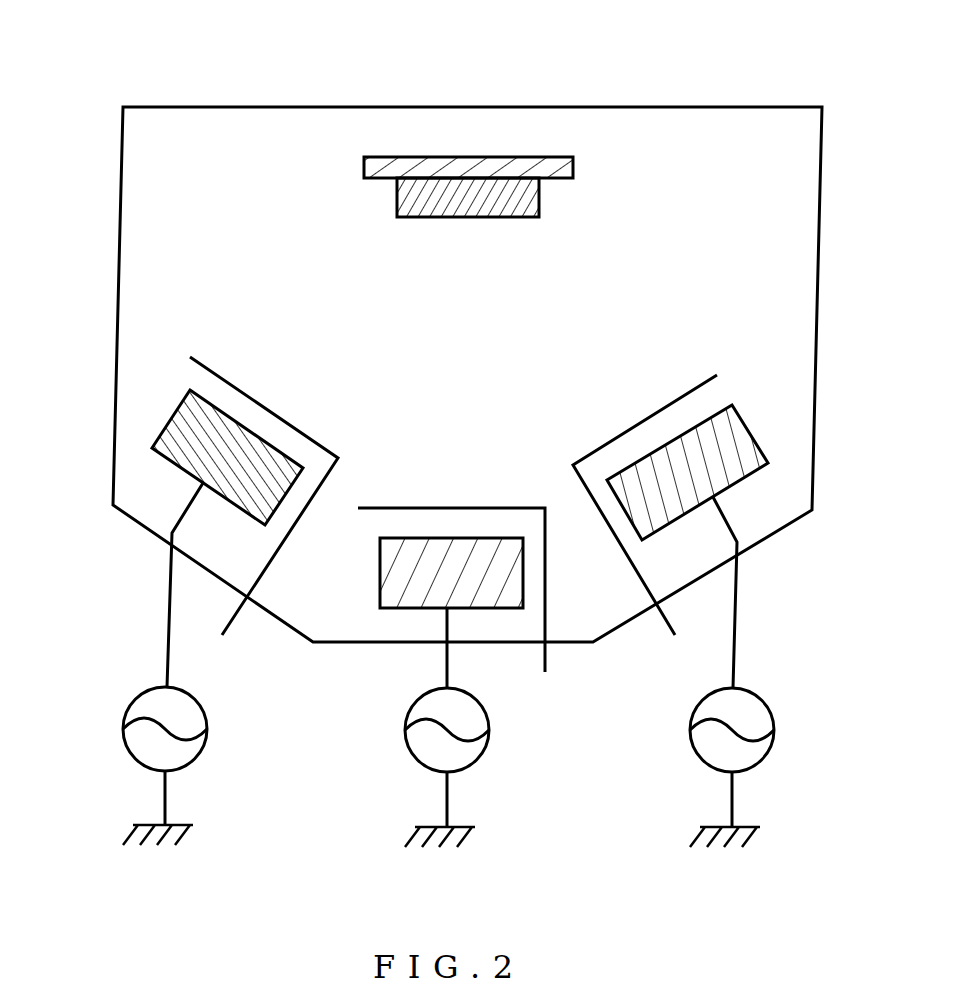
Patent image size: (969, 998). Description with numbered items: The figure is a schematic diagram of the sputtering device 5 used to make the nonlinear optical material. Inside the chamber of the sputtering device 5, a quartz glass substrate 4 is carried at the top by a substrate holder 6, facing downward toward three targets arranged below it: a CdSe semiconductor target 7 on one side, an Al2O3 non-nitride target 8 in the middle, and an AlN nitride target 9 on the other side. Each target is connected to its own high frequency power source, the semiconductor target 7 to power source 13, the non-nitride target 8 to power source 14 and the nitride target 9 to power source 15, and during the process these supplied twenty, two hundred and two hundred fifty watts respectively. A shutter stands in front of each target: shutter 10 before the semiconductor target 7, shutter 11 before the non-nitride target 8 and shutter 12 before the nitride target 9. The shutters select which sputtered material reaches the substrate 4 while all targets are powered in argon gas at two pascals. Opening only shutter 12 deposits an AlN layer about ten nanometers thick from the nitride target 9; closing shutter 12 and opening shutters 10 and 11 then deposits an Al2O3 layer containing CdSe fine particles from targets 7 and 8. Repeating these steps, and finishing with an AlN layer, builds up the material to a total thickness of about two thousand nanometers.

The substrate 4 is at (539, 200).
The sputtering device 5 is at (738, 57).
The substrate holder 6 is at (490, 163).
The semiconductor target 7 is at (177, 420).
The non-nitride target 8 is at (410, 600).
The nitride target 9 is at (732, 438).
The shutter 10 is at (222, 635).
The shutter 11 is at (544, 662).
The shutter 12 is at (673, 633).
The power source 13 is at (200, 748).
The power source 14 is at (487, 752).
The power source 15 is at (773, 752).